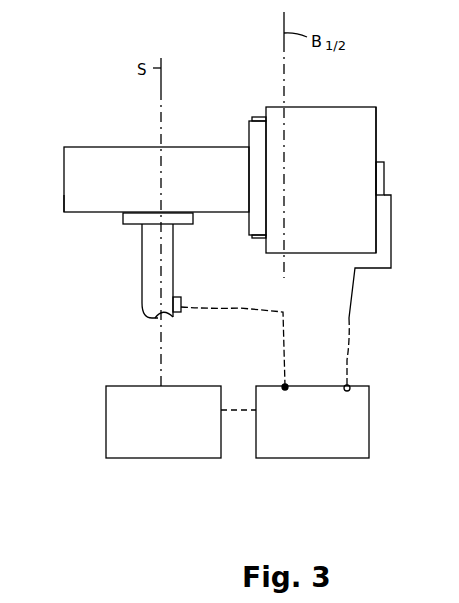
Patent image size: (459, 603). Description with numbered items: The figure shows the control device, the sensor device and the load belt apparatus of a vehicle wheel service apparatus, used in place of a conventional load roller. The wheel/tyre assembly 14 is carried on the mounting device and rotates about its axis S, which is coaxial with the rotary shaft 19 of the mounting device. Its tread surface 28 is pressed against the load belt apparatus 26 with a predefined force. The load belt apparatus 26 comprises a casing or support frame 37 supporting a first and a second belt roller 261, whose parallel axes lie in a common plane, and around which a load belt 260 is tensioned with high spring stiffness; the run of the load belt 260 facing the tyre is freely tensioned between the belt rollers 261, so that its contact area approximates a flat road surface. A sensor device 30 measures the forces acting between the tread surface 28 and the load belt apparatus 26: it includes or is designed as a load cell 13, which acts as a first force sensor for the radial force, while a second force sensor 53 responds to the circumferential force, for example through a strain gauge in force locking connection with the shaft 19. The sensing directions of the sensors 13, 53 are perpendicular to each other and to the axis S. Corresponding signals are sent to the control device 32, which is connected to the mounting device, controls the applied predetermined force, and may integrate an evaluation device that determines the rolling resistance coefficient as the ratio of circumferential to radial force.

The wheel/tyre assembly 14 is at (75, 180).
The tread surface 28 is at (60, 204).
The shaft 19 is at (145, 277).
The second force sensor 53 is at (178, 312).
The load belt apparatus 26 is at (379, 91).
The support frame 37 is at (376, 138).
The load cell 13 is at (384, 177).
The load belt 260 is at (248, 130).
The belt roller 261 is at (253, 117).
The control device 32 is at (157, 452).
The sensor device 30 is at (303, 452).